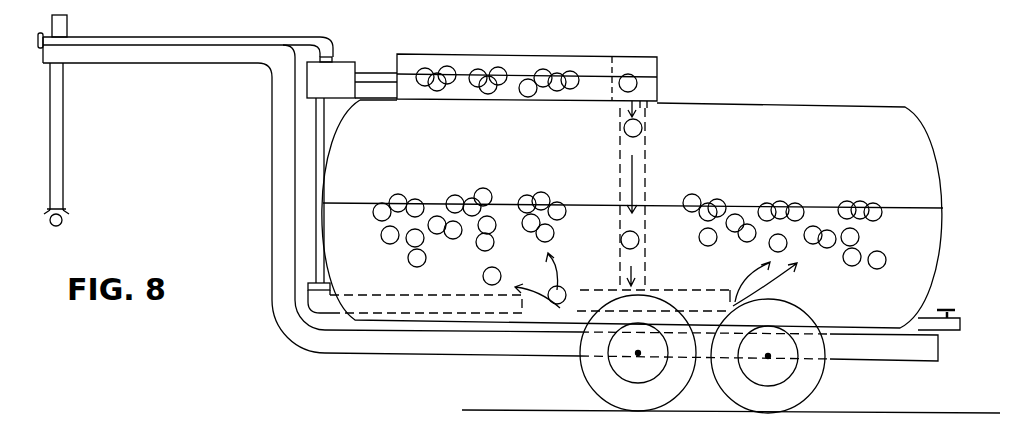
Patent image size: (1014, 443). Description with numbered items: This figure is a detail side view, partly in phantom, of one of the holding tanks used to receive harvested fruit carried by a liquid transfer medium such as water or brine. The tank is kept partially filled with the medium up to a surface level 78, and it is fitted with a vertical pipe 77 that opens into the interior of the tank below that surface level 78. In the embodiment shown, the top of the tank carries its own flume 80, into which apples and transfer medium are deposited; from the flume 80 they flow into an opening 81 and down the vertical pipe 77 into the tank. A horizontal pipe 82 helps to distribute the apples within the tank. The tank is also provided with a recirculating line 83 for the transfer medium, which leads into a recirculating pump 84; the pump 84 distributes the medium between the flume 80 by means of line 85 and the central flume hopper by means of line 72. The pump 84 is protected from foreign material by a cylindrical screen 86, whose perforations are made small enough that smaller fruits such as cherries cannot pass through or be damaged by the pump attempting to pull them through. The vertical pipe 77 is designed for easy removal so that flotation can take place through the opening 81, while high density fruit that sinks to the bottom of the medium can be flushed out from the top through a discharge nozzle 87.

The line 72 is at (176, 37).
The vertical pipe 77 is at (642, 131).
The surface level 78 is at (812, 203).
The flume 80 is at (657, 60).
The opening 81 is at (642, 106).
The horizontal pipe 82 is at (580, 290).
The recirculating line 83 is at (317, 241).
The recirculating pump 84 is at (338, 66).
The line 85 is at (365, 78).
The cylindrical screen 86 is at (392, 294).
The discharge nozzle 87 is at (950, 331).